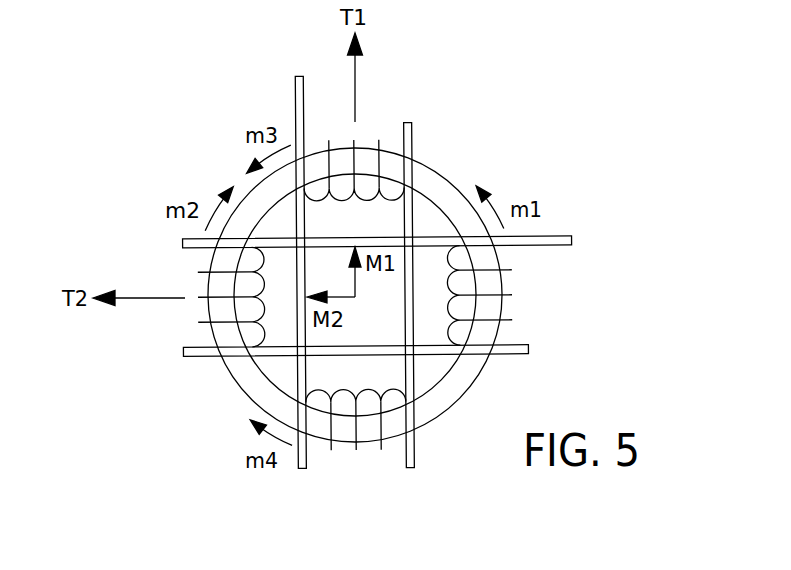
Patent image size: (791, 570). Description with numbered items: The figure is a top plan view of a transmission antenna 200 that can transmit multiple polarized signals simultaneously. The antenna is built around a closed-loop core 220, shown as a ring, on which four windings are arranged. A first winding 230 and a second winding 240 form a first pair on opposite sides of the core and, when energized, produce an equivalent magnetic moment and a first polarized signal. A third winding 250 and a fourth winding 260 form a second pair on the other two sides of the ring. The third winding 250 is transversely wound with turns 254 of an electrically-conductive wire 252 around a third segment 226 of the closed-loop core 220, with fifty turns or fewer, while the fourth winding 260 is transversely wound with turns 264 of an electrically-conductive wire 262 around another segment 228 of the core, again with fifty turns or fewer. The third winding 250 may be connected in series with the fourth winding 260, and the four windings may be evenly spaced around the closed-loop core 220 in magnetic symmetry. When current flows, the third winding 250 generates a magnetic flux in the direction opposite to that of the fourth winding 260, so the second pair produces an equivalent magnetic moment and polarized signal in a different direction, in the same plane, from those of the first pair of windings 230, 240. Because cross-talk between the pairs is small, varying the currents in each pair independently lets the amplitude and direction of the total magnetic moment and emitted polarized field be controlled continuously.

The transmission antenna 200 is at (150, 142).
The closed-loop core 220 is at (448, 195).
The third segment 226 is at (367, 155).
The third segment 228 is at (318, 428).
The first winding 230 is at (589, 277).
The second winding 240 is at (152, 338).
The third winding 250 is at (407, 97).
The electrically-conductive wire 252 is at (307, 97).
The turns 254 is at (339, 201).
The fourth winding 260 is at (427, 485).
The electrically-conductive wire 262 is at (405, 452).
The turns 264 is at (383, 450).